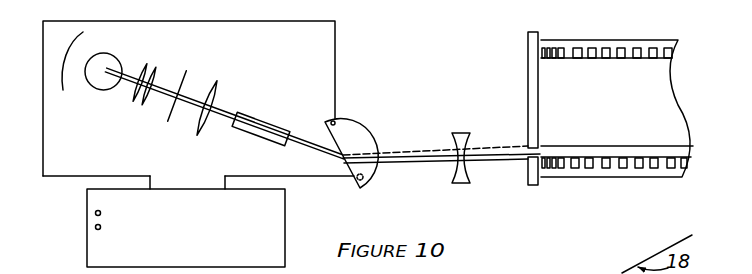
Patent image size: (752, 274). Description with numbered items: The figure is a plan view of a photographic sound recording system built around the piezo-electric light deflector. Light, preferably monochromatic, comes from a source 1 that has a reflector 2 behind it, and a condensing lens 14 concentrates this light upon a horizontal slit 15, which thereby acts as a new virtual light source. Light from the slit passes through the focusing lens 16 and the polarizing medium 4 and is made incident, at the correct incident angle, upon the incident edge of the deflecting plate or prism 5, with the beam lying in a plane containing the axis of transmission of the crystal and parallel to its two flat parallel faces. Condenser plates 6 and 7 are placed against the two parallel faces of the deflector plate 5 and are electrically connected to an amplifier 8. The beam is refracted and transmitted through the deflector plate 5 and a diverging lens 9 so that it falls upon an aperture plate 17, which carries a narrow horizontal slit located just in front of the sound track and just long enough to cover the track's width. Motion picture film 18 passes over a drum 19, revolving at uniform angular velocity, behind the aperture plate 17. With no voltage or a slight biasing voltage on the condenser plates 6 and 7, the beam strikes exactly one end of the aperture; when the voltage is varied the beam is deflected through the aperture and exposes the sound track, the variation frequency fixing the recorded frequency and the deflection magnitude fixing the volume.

The source 1 is at (121, 52).
The reflector 2 is at (57, 61).
The polarizing medium 4 is at (278, 122).
The deflecting plate or prism 5 is at (381, 135).
The condenser plate 6 is at (342, 125).
The condenser plate 7 is at (363, 190).
The amplifier 8 is at (186, 221).
The diverging lens 9 is at (466, 131).
The condensing lens 14 is at (159, 80).
The horizontal slit 15 is at (188, 88).
The focusing lens 16 is at (223, 100).
The aperture plate 17 is at (527, 82).
The motion picture film 18 is at (619, 123).
The drum 19 is at (618, 181).